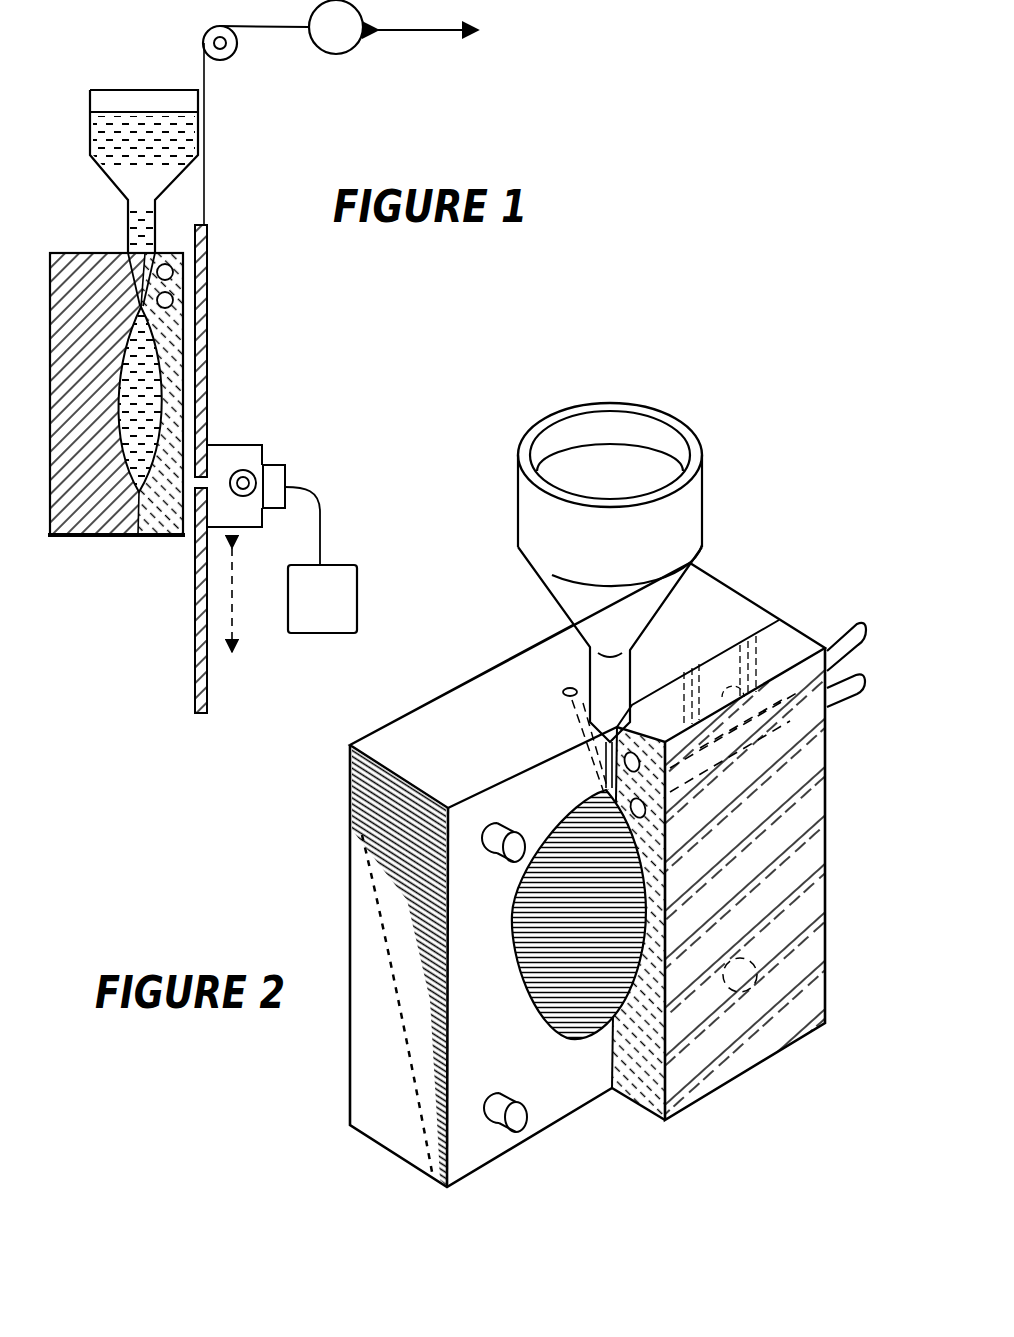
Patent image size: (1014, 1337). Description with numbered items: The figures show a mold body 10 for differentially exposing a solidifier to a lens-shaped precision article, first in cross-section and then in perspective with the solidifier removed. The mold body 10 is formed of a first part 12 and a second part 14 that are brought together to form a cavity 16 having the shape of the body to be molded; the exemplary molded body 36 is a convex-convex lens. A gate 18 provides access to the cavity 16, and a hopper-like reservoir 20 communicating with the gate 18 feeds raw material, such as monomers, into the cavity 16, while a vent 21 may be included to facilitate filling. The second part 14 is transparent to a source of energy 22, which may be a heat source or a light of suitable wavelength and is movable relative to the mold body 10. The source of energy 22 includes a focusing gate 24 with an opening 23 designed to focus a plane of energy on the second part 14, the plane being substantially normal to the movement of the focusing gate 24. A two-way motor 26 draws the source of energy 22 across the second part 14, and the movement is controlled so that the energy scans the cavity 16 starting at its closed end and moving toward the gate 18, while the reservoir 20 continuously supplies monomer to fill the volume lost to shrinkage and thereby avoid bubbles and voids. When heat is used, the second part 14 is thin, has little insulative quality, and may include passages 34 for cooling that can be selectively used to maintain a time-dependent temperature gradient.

In FIG. 1, the mold body 10 is at (108, 586).
In FIG. 2, the mold body 10 is at (780, 562).
In FIG. 1, the first part 12 is at (72, 535).
In FIG. 2, the first part 12 is at (468, 714).
In FIG. 1, the second part 14 is at (157, 537).
In FIG. 2, the second part 14 is at (783, 645).
In FIG. 1, the cavity 16 is at (152, 396).
In FIG. 1, the gate 18 is at (145, 307).
In FIG. 1, the reservoir 20 is at (104, 160).
In FIG. 2, the reservoir 20 is at (693, 497).
In FIG. 1, the vent 21 is at (140, 305).
In FIG. 2, the vent 21 is at (567, 681).
In FIG. 1, the source of energy 22 is at (295, 428).
In FIG. 1, the opening 23 is at (207, 481).
In FIG. 1, the focusing gate 24 is at (207, 688).
In FIG. 1, the two-way motor 26 is at (360, 45).
In FIG. 1, the passages 34 is at (170, 296).
In FIG. 2, the passages 34 is at (782, 696).
In FIG. 2, the molded body 36 is at (533, 1019).